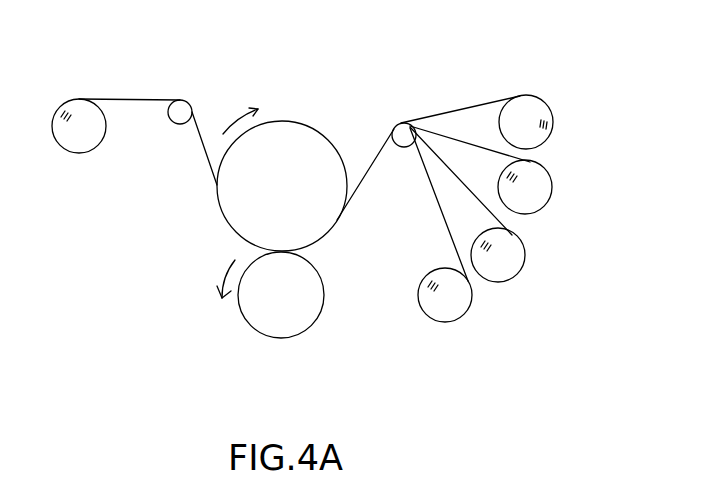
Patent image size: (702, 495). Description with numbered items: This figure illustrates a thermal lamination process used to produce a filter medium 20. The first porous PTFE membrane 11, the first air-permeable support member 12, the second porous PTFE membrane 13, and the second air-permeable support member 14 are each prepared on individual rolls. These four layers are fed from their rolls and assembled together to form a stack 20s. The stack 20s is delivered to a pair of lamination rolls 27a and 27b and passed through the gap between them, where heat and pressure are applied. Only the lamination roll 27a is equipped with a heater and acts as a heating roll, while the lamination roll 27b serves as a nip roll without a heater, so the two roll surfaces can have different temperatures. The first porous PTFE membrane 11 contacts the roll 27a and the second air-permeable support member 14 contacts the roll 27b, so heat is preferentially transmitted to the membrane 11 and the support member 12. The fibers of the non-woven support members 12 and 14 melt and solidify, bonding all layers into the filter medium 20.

The filter medium 20 is at (77, 138).
The stack 20s is at (366, 173).
The lamination roll 27a is at (280, 137).
The lamination roll 27b is at (278, 327).
The first porous PTFE membrane 11 is at (526, 110).
The first air-permeable support member 12 is at (535, 185).
The second porous PTFE membrane 13 is at (510, 260).
The second air-permeable support member 14 is at (456, 306).